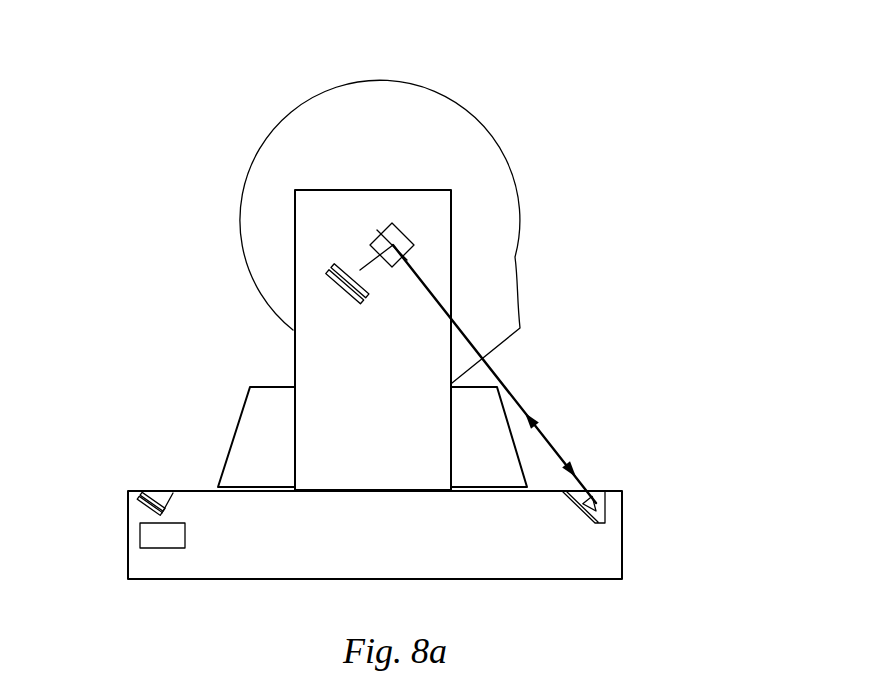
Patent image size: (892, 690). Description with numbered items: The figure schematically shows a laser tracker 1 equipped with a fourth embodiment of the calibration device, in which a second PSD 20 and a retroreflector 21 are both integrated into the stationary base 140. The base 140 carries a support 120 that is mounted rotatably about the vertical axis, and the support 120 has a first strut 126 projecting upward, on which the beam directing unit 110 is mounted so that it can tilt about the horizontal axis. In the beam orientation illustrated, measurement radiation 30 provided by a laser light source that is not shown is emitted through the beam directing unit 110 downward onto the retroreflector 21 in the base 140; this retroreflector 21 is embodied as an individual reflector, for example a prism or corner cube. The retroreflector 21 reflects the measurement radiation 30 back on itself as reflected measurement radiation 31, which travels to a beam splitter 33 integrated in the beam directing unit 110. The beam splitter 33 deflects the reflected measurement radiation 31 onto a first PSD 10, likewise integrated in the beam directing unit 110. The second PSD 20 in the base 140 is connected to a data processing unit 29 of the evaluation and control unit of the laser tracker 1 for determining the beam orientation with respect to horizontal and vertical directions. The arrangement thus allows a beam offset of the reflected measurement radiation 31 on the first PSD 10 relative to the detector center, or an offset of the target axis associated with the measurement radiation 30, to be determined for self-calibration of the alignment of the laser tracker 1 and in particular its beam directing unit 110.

The laser tracker 1 is at (221, 109).
The beam directing unit 110 is at (342, 118).
The first strut 126 is at (330, 345).
The support 120 is at (245, 463).
The base 140 is at (317, 568).
The reflected measurement radiation 31 is at (365, 262).
The first PSD 10 is at (326, 294).
The beam splitter 33 is at (397, 240).
The measurement radiation 30 is at (547, 437).
The retroreflector 21 is at (600, 515).
The second PSD 20 is at (148, 507).
The data processing unit 29 is at (152, 540).